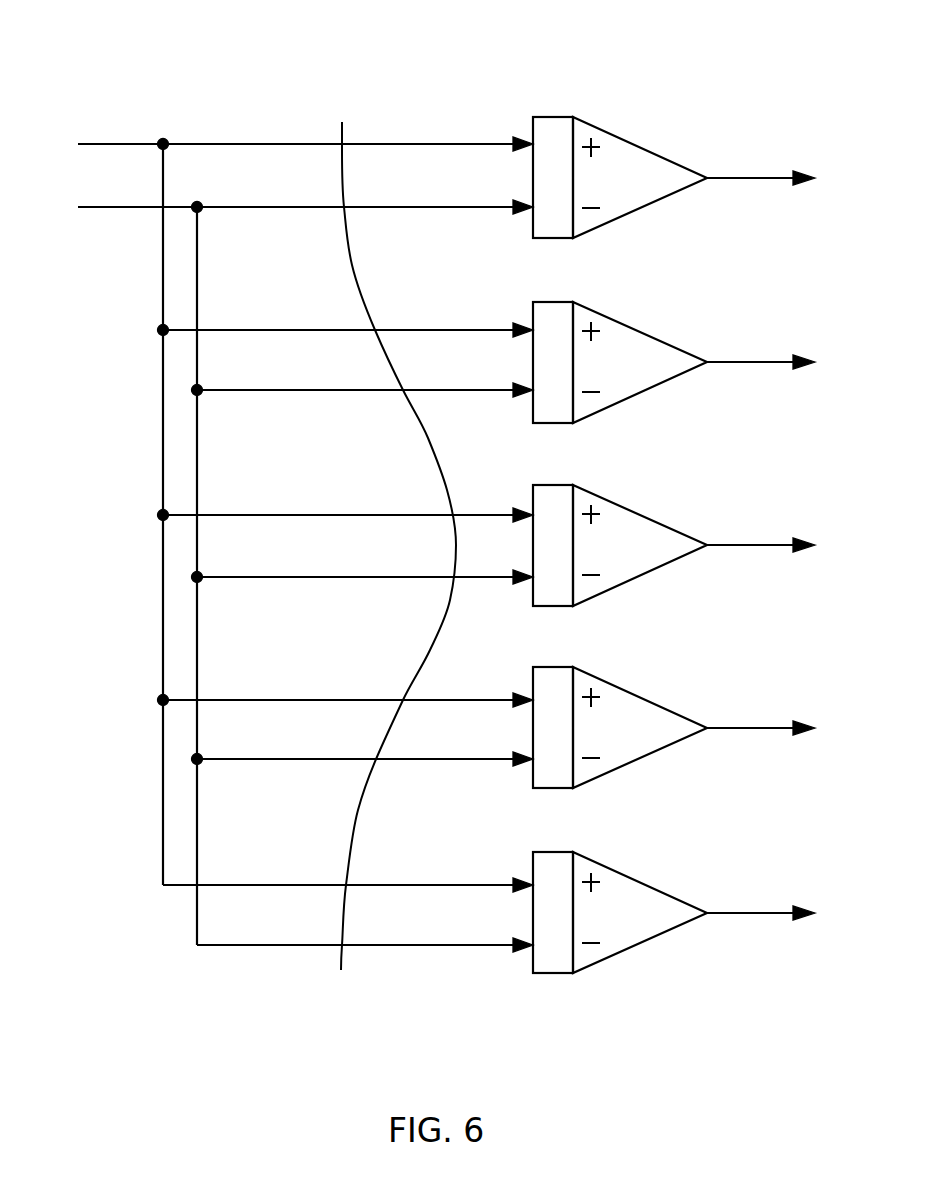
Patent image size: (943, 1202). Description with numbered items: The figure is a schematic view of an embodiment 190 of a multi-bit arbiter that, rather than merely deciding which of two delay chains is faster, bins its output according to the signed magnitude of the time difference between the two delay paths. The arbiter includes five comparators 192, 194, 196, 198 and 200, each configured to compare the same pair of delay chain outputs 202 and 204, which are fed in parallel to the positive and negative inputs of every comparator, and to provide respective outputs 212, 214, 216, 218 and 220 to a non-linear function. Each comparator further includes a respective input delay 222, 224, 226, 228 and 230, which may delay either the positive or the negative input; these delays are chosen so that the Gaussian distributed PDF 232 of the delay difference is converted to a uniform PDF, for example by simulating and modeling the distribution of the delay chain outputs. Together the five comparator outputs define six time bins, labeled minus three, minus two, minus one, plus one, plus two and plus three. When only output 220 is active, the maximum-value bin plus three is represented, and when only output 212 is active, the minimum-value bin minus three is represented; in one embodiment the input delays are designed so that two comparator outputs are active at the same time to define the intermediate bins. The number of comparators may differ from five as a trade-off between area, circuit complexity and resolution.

The multi-bit arbiter 190 is at (436, 46).
The comparator 192 is at (640, 177).
The comparator 194 is at (640, 362).
The comparator 196 is at (640, 545).
The comparator 198 is at (640, 727).
The comparator 200 is at (640, 912).
The delay chain output 202 is at (107, 143).
The delay chain output 204 is at (108, 207).
The output 212 is at (752, 178).
The output 214 is at (752, 362).
The output 216 is at (752, 545).
The output 218 is at (752, 728).
The output 220 is at (752, 913).
The input delay 222 is at (553, 177).
The input delay 224 is at (553, 362).
The input delay 226 is at (553, 545).
The input delay 228 is at (553, 727).
The input delay 230 is at (553, 912).
The Gaussian distributed PDF 232 is at (432, 448).